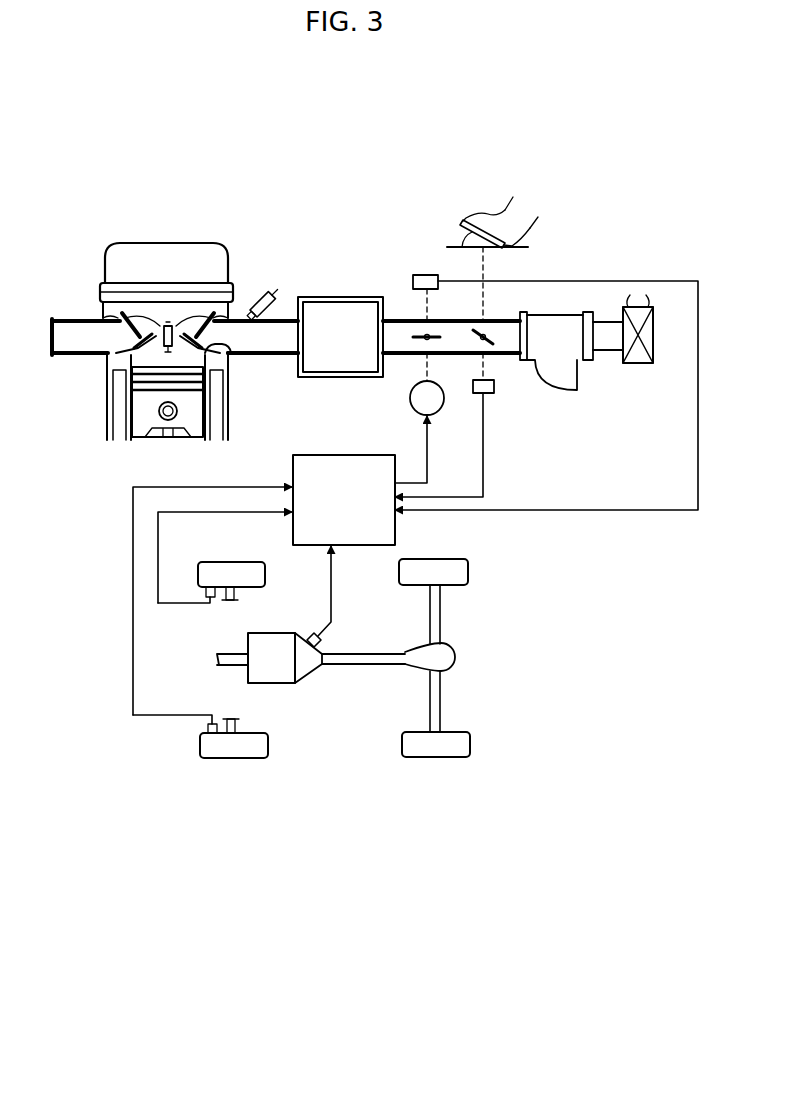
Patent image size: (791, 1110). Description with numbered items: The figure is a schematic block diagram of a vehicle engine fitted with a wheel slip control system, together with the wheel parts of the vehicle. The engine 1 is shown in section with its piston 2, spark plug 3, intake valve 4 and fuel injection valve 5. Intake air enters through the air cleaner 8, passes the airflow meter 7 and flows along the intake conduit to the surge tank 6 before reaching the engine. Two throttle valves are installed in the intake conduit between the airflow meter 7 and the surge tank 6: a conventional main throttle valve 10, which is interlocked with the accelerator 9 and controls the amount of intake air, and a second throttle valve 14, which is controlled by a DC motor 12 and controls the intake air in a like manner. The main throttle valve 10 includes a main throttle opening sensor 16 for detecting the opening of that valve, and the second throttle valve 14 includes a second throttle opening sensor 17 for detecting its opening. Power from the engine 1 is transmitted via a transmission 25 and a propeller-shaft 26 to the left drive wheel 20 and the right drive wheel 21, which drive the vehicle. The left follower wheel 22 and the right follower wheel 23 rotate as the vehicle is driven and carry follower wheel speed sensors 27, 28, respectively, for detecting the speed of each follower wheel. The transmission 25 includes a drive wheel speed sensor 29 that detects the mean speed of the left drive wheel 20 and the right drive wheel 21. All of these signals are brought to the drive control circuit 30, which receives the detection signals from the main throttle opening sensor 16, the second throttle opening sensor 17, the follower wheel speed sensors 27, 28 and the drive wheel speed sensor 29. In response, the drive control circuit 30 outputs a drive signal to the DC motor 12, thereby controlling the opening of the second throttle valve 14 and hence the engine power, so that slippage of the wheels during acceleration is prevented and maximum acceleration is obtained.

The engine 1 is at (182, 235).
The piston 2 is at (196, 437).
The spark plug 3 is at (171, 325).
The intake valve 4 is at (229, 355).
The fuel injection valve 5 is at (270, 290).
The surge tank 6 is at (338, 379).
The airflow meter 7 is at (555, 391).
The air cleaner 8 is at (630, 365).
The accelerator 9 is at (462, 223).
The main throttle valve 10 is at (491, 341).
The DC motor 12 is at (441, 411).
The second throttle valve 14 is at (414, 332).
The main throttle opening sensor 16 is at (495, 394).
The second throttle opening sensor 17 is at (421, 275).
The left drive wheel 20 is at (438, 758).
The right drive wheel 21 is at (440, 559).
The left follower wheel 22 is at (238, 758).
The right follower wheel 23 is at (232, 562).
The transmission 25 is at (281, 683).
The propeller-shaft 26 is at (350, 666).
The follower wheel speed sensor 27 is at (208, 728).
The follower wheel speed sensor 28 is at (206, 591).
The drive wheel speed sensor 29 is at (325, 645).
The drive control circuit 30 is at (359, 455).